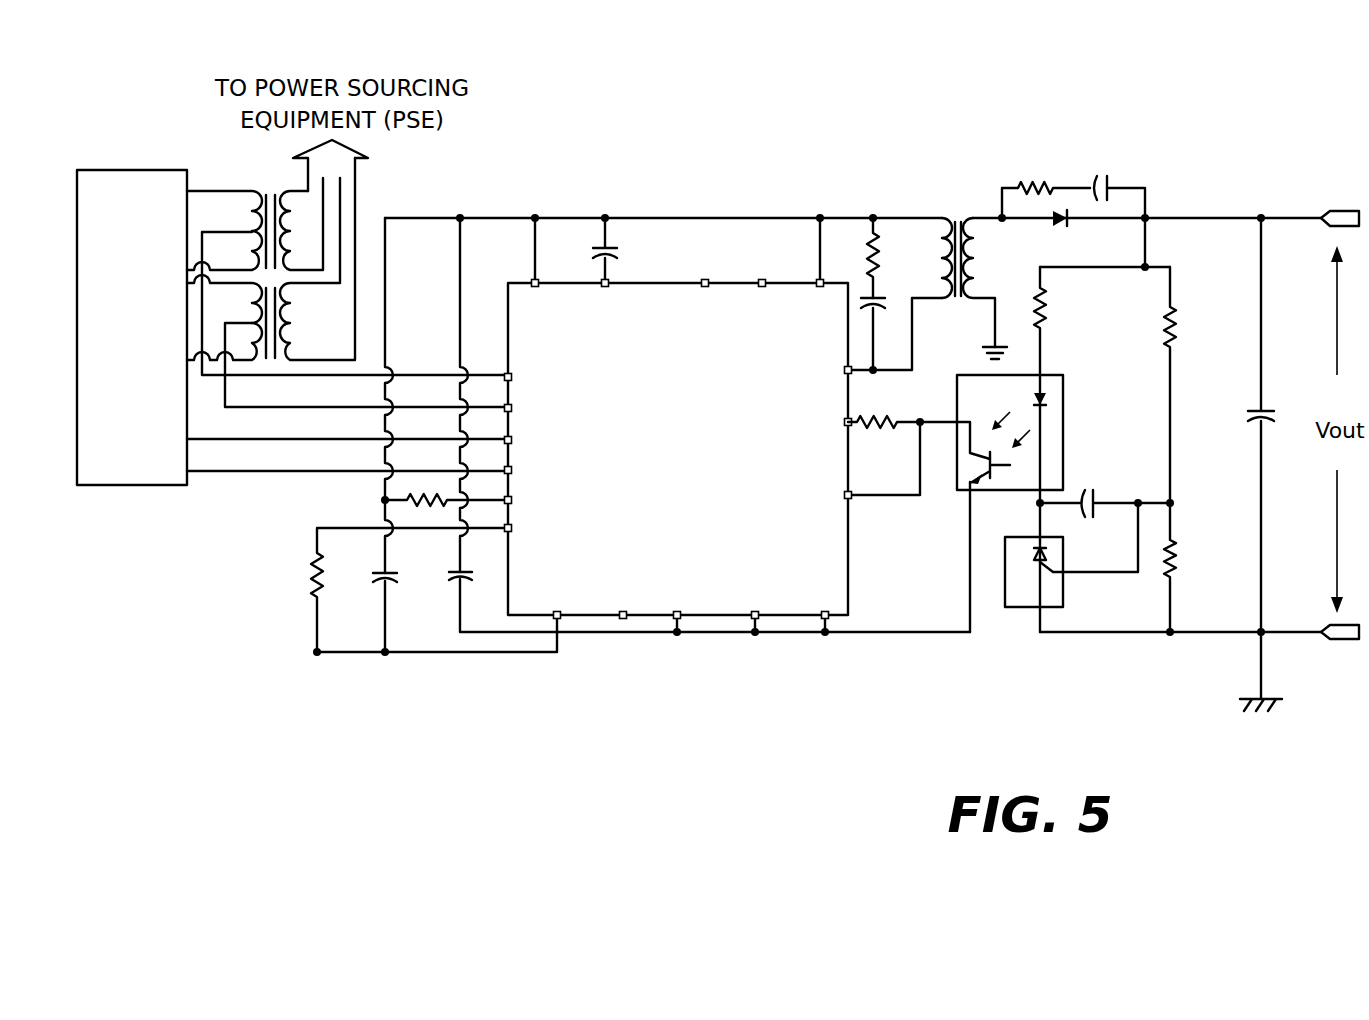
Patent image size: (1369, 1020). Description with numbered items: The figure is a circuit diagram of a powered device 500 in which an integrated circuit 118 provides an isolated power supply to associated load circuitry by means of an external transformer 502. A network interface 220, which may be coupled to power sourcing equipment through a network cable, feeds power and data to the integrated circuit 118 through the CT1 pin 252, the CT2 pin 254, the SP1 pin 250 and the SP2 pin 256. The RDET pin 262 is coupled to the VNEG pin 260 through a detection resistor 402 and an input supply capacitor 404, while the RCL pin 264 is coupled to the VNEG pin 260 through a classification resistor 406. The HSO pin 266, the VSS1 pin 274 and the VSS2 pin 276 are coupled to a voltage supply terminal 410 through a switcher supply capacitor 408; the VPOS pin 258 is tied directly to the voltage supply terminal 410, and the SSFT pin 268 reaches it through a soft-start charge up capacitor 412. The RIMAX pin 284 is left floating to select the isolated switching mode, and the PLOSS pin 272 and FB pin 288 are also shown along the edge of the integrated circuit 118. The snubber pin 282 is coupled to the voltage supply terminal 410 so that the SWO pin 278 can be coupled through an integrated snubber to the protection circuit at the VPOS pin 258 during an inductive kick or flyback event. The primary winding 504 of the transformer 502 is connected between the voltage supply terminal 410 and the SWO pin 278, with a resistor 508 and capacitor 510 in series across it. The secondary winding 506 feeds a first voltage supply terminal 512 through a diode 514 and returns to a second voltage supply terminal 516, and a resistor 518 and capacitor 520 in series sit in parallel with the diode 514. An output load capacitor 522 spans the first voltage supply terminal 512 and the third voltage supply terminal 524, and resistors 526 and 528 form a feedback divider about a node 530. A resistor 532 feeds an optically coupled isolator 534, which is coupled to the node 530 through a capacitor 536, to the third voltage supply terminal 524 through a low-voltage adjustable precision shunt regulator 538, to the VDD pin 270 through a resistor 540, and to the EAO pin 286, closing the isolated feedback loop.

The integrated circuit 118 is at (850, 583).
The network interface 220 is at (128, 485).
The SP1 pin 250 is at (512, 440).
The CT1 pin 252 is at (512, 377).
The CT2 pin 254 is at (512, 408).
The SP2 pin 256 is at (512, 470).
The VPOS pin 258 is at (535, 283).
The VNEG pin 260 is at (560, 618).
The RDET pin 262 is at (512, 500).
The RCL pin 264 is at (512, 528).
The HSO pin 266 is at (680, 618).
The SSFT pin 268 is at (608, 283).
The VDD pin 270 is at (845, 422).
The PLOSS pin 272 is at (625, 618).
The VSS1 pin 274 is at (758, 618).
The VSS2 pin 276 is at (828, 618).
The SWO pin 278 is at (845, 370).
The snubber pin 282 is at (818, 283).
The RIMAX pin 284 is at (706, 283).
The EAO pin 286 is at (851, 497).
The FB pin 288 is at (762, 283).
The detection resistor 402 is at (407, 500).
The input supply capacitor 404 is at (378, 573).
The classification resistor 406 is at (313, 565).
The switcher supply capacitor 408 is at (456, 572).
The voltage supply terminal 410 is at (905, 262).
The soft-start charge up capacitor 412 is at (598, 250).
The powered device 500 is at (804, 130).
The transformer 502 is at (980, 224).
The primary winding 504 is at (955, 218).
The secondary winding 506 is at (998, 282).
The resistor 508 is at (880, 250).
The capacitor 510 is at (883, 307).
The first voltage supply terminal 512 is at (1201, 218).
The diode 514 is at (1060, 228).
The second voltage supply terminal 516 is at (995, 333).
The resistor 518 is at (1037, 180).
The capacitor 520 is at (1107, 175).
The output load capacitor 522 is at (1265, 408).
The third voltage supply terminal 524 is at (1145, 632).
The resistor 526 is at (1180, 337).
The resistor 528 is at (1177, 563).
The node 530 is at (1177, 503).
The resistor 532 is at (1047, 317).
The optically coupled isolator 534 is at (1063, 390).
The capacitor 536 is at (1090, 487).
The low-voltage adjustable precision shunt regulator 538 is at (1005, 605).
The resistor 540 is at (878, 413).